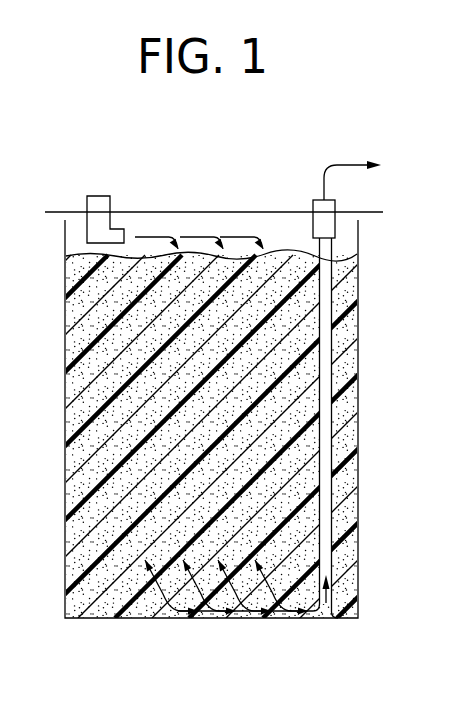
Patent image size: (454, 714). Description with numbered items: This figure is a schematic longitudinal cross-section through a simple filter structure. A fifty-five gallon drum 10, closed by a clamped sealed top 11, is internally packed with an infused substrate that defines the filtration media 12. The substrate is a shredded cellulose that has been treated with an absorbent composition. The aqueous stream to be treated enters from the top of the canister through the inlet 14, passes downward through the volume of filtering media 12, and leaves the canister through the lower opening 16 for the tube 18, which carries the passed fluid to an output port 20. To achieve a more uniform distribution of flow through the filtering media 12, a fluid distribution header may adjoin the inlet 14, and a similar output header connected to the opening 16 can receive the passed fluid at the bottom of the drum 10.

The drum 10 is at (376, 372).
The clamped sealed top 11 is at (222, 210).
The filtration media 12 is at (140, 372).
The inlet 14 is at (98, 181).
The lower opening 16 is at (333, 618).
The tube 18 is at (327, 458).
The output port 20 is at (313, 202).